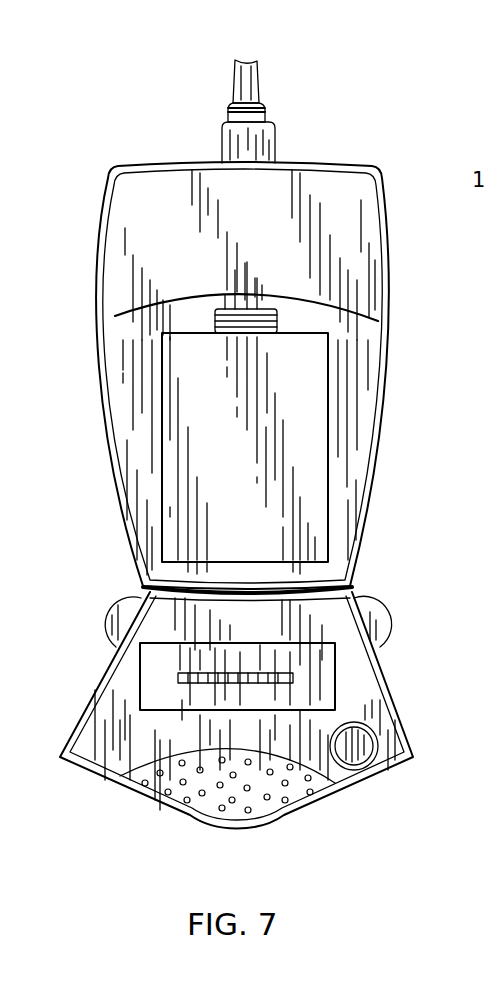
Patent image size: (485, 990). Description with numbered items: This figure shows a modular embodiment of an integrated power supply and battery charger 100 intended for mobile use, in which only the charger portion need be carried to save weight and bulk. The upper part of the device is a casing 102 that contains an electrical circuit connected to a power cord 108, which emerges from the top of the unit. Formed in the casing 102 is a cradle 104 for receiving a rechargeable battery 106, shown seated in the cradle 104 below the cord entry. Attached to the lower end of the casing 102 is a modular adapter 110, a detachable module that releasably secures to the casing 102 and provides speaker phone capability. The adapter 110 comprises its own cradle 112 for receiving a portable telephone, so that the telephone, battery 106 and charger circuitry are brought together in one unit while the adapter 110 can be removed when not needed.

The integrated power supply and battery charger 100 is at (375, 530).
The casing 102 is at (383, 295).
The cradle 104 is at (373, 446).
The rechargeable battery 106 is at (218, 530).
The power cord 108 is at (245, 83).
The modular adapter 110 is at (380, 656).
The cradle 112 is at (100, 663).